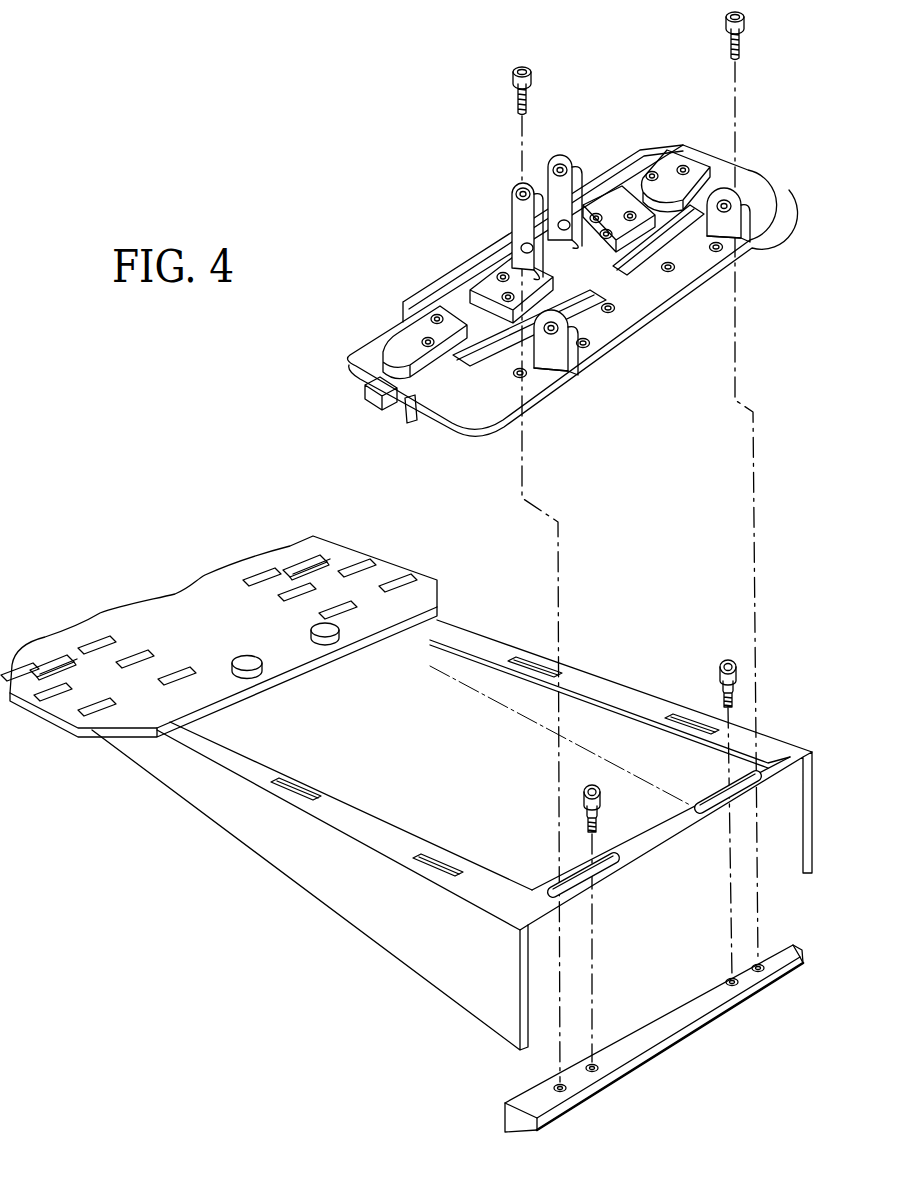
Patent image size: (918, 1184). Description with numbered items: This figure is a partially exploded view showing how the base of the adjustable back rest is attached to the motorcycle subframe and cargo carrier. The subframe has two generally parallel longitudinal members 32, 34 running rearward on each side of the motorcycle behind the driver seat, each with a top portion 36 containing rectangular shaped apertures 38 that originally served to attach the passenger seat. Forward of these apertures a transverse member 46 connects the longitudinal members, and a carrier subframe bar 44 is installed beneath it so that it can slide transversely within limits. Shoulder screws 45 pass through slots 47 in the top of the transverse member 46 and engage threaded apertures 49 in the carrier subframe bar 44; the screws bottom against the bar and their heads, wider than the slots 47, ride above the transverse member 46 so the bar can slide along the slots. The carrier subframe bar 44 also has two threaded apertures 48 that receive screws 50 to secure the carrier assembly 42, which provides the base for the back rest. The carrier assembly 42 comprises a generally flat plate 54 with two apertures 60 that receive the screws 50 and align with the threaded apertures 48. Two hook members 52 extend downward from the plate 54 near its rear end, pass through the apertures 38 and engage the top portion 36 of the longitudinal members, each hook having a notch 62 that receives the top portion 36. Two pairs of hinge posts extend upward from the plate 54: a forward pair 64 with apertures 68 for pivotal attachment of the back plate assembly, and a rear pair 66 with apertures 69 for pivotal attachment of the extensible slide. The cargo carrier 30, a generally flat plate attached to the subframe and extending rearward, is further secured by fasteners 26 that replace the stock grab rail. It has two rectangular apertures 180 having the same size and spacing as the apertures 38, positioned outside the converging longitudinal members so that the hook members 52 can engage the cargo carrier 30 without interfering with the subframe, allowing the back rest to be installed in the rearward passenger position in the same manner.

The fasteners 26 is at (337, 675).
The cargo carrier 30 is at (62, 718).
The longitudinal member 32 is at (452, 815).
The longitudinal member 34 is at (254, 852).
The top portion 36 is at (472, 636).
The rectangular shaped apertures 38 is at (300, 789).
The carrier assembly 42 is at (722, 172).
The carrier subframe bar 44 is at (661, 1005).
The shoulder screws 45 is at (728, 660).
The transverse member 46 is at (568, 870).
The slots 47 is at (745, 772).
The threaded apertures 48 is at (759, 963).
The threaded apertures 49 is at (731, 977).
The screws 50 is at (530, 70).
The hook members 52 is at (403, 408).
The plate 54 is at (738, 258).
The apertures 60 is at (517, 377).
The notch 62 is at (360, 387).
The forward pair of hinge posts 64 is at (716, 200).
The rear pair of hinge posts 66 is at (578, 160).
The apertures 68 is at (731, 206).
The apertures 69 is at (560, 166).
The rectangular apertures 180 is at (298, 560).